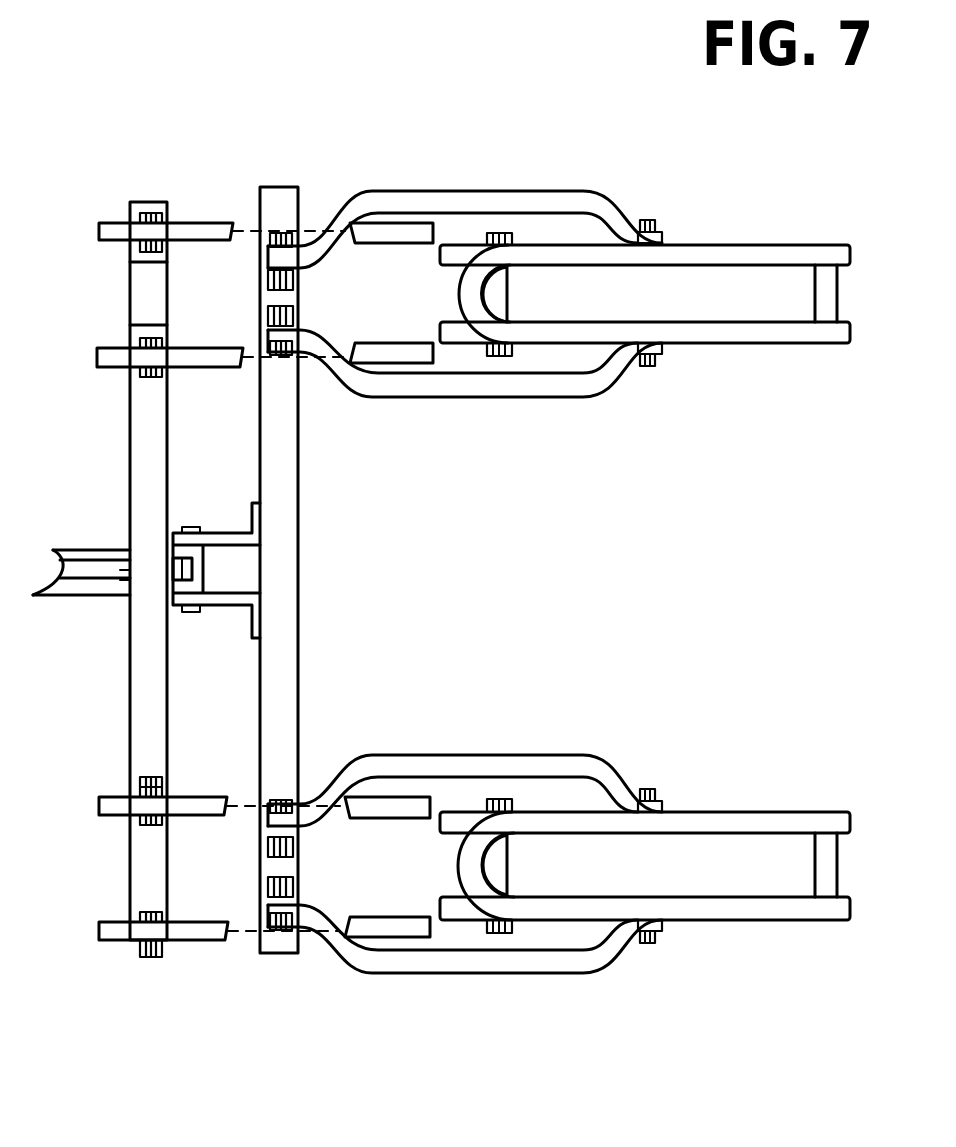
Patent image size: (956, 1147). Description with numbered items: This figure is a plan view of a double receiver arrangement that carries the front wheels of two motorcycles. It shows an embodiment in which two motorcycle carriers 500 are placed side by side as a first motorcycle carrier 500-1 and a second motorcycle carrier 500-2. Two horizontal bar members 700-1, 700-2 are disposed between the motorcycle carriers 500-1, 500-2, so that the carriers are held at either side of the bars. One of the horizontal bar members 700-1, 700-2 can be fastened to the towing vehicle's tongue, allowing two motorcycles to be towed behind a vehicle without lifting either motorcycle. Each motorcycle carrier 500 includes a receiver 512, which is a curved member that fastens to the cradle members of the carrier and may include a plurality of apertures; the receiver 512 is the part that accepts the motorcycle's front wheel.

The horizontal bar member 700-1 is at (148, 453).
The horizontal bar member 700-2 is at (282, 463).
The motorcycle carrier 500 is at (579, 582).
The motorcycle carrier 500-1 is at (780, 802).
The motorcycle carrier 500-2 is at (800, 360).
The receiver 512 is at (472, 287).